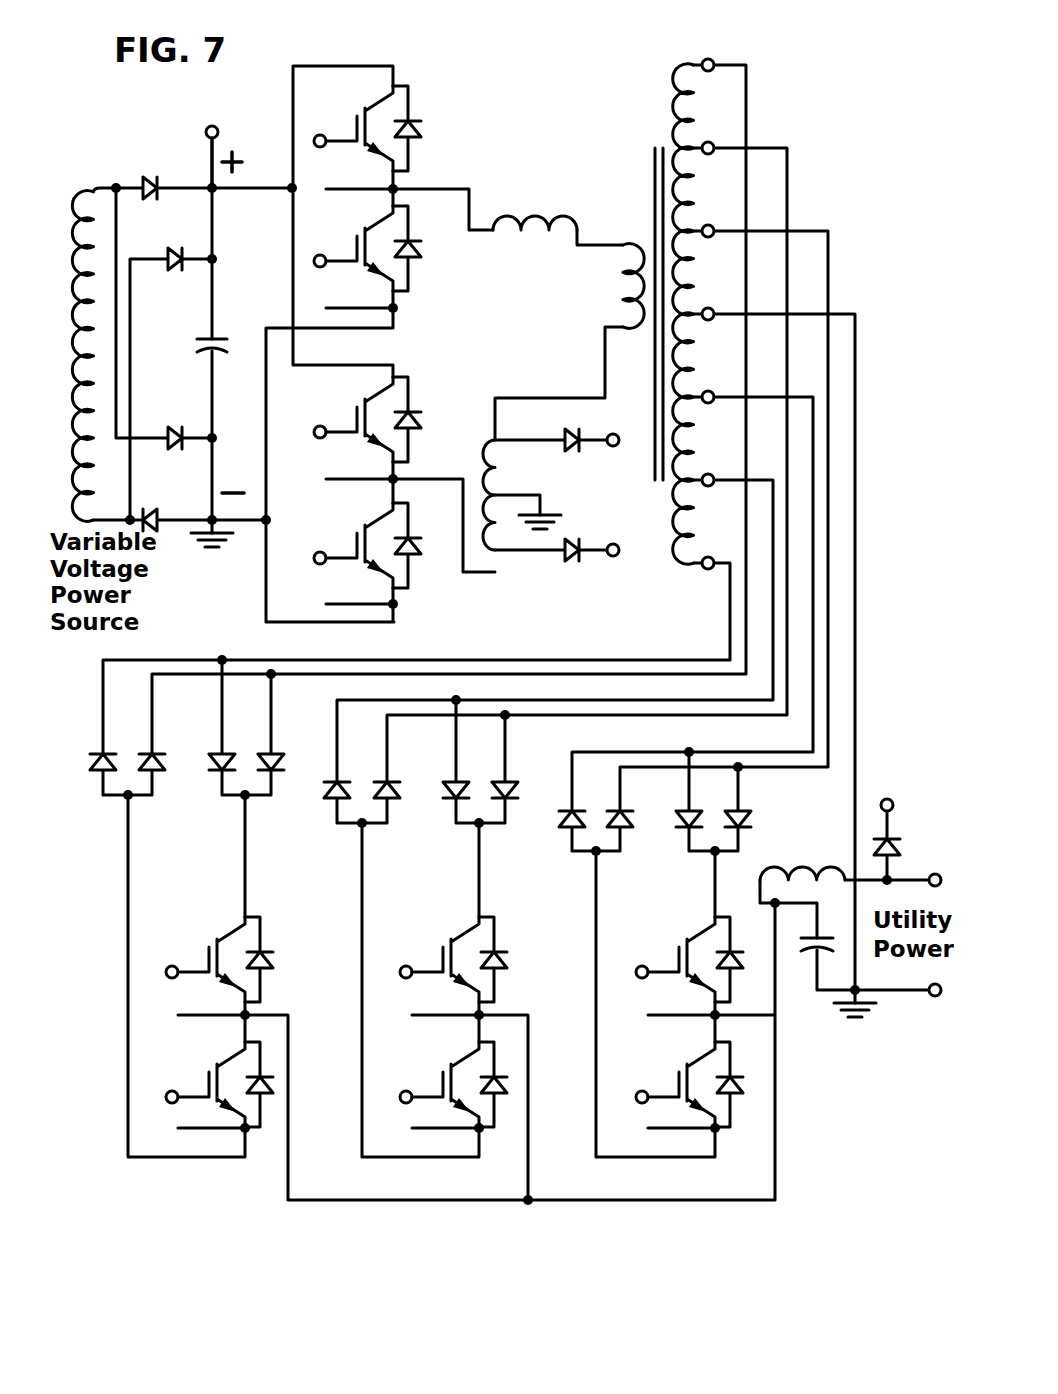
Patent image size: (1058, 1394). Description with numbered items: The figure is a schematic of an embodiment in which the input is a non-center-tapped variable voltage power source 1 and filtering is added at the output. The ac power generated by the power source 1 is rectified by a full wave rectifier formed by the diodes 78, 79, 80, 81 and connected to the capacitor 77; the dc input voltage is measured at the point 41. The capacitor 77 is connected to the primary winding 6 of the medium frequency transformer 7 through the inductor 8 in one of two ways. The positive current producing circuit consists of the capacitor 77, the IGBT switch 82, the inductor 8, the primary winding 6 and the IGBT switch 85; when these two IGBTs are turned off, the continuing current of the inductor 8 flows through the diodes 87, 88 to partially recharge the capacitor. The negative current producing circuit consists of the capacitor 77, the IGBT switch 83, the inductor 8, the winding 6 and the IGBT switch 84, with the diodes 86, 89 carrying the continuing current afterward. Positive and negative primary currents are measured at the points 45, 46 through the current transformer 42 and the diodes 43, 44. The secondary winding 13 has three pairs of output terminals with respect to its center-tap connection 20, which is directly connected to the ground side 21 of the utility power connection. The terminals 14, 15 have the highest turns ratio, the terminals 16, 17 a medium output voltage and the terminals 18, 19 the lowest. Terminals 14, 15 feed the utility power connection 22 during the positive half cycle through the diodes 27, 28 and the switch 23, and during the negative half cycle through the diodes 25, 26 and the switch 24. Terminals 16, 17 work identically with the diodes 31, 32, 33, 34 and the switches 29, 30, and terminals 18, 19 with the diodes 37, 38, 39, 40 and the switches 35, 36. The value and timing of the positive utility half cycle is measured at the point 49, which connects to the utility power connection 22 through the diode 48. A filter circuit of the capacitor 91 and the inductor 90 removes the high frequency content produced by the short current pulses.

The power source 1 is at (82, 190).
The primary winding 6 is at (627, 243).
The transformer 7 is at (653, 172).
The inductor 8 is at (532, 203).
The secondary winding 13 is at (677, 82).
The transformer output terminal 14 is at (713, 62).
The transformer output terminal 15 is at (714, 558).
The transformer output terminal 16 is at (711, 143).
The transformer output terminal 17 is at (712, 475).
The transformer output terminal 18 is at (712, 226).
The transformer output terminal 19 is at (712, 392).
The center-tap connection 20 is at (712, 309).
The ground side 21 is at (935, 998).
The utility power connection 22 is at (935, 874).
The switch 23 is at (208, 962).
The switch 24 is at (208, 1087).
The diode 25 is at (100, 770).
The diode 26 is at (157, 770).
The diode 27 is at (217, 770).
The diode 28 is at (277, 772).
The switch 29 is at (442, 963).
The switch 30 is at (443, 1090).
The diode 31 is at (337, 803).
The diode 32 is at (396, 806).
The diode 33 is at (450, 803).
The diode 34 is at (513, 805).
The switch 35 is at (680, 960).
The switch 36 is at (680, 1085).
The diode 37 is at (572, 831).
The diode 38 is at (625, 831).
The diode 39 is at (682, 833).
The diode 40 is at (747, 815).
The measurement point 41 is at (218, 132).
The current transformer 42 is at (492, 442).
The diode 43 is at (572, 452).
The diode 44 is at (572, 562).
The measurement point 45 is at (613, 448).
The measurement point 46 is at (613, 558).
The diode 48 is at (893, 840).
The measurement point 49 is at (888, 798).
The capacitor 77 is at (222, 343).
The diode 78 is at (150, 178).
The diode 79 is at (175, 270).
The diode 80 is at (175, 428).
The diode 81 is at (157, 533).
The IGBT switch 82 is at (356, 124).
The IGBT switch 83 is at (356, 252).
The IGBT switch 84 is at (358, 417).
The IGBT switch 85 is at (358, 548).
The diode 86 is at (418, 131).
The diode 87 is at (420, 258).
The diode 88 is at (415, 415).
The diode 89 is at (418, 550).
The inductor 90 is at (802, 858).
The capacitor 91 is at (803, 945).